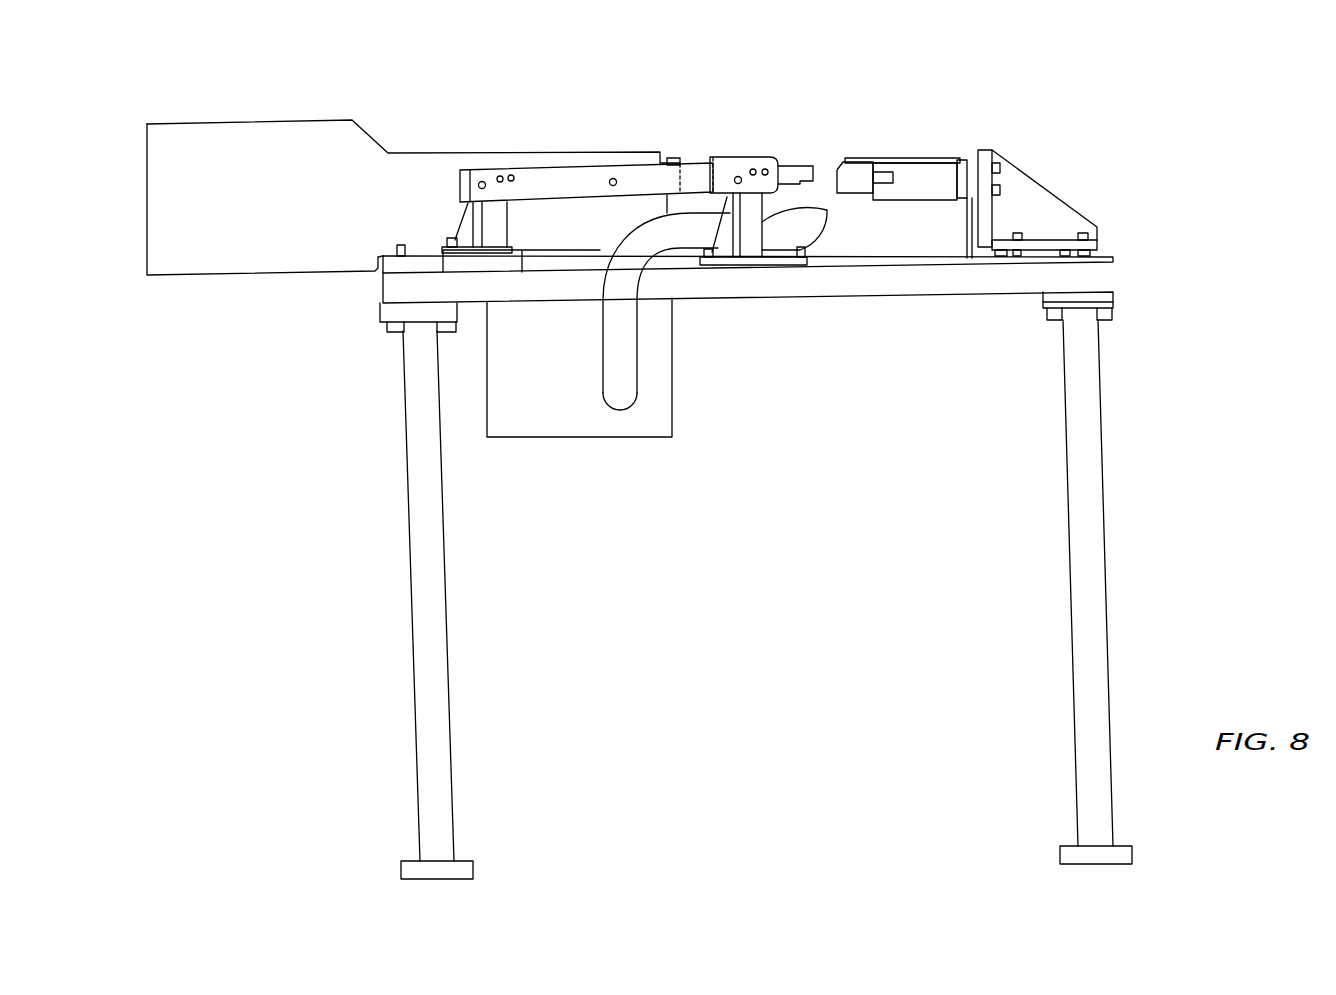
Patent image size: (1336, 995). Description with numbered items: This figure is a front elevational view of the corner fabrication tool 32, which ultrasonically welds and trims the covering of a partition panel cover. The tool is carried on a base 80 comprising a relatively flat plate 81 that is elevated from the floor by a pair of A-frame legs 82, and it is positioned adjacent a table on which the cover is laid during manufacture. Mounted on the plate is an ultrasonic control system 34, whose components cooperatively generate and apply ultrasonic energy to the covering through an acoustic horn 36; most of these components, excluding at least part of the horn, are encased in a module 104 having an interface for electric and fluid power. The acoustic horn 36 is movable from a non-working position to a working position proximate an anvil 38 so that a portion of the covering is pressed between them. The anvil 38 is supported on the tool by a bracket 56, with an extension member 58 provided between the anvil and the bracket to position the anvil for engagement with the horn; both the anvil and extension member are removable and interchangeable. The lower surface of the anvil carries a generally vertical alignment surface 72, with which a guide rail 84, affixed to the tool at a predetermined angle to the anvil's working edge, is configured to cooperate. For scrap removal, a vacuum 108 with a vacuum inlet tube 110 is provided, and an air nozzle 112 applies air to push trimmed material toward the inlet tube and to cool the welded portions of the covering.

The corner fabrication tool 32 is at (948, 73).
The ultrasonic control system 34 is at (500, 149).
The acoustic horn 36 is at (793, 160).
The anvil 38 is at (857, 160).
The bracket 56 is at (1063, 196).
The extension member 58 is at (947, 177).
The alignment surface 72 is at (862, 190).
The base 80 is at (1118, 307).
The plate 81 is at (1108, 270).
The A-frame legs 82 is at (444, 480).
The guide rail 84 is at (575, 183).
The module 104 is at (259, 258).
The vacuum 108 is at (565, 422).
The vacuum inlet tube 110 is at (623, 318).
The air nozzle 112 is at (903, 157).